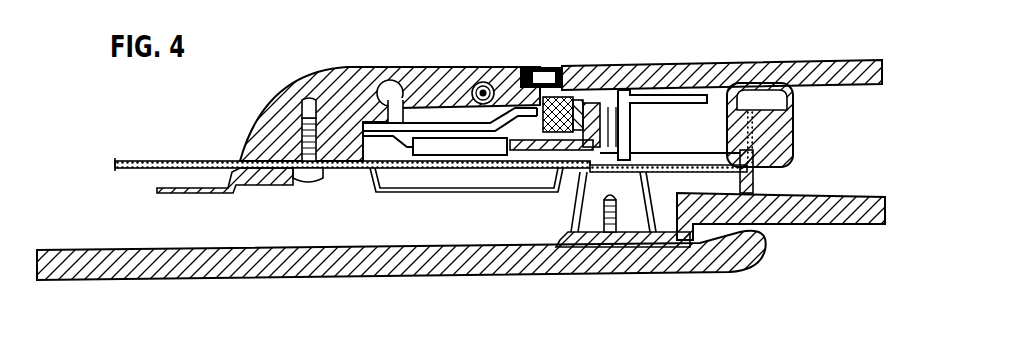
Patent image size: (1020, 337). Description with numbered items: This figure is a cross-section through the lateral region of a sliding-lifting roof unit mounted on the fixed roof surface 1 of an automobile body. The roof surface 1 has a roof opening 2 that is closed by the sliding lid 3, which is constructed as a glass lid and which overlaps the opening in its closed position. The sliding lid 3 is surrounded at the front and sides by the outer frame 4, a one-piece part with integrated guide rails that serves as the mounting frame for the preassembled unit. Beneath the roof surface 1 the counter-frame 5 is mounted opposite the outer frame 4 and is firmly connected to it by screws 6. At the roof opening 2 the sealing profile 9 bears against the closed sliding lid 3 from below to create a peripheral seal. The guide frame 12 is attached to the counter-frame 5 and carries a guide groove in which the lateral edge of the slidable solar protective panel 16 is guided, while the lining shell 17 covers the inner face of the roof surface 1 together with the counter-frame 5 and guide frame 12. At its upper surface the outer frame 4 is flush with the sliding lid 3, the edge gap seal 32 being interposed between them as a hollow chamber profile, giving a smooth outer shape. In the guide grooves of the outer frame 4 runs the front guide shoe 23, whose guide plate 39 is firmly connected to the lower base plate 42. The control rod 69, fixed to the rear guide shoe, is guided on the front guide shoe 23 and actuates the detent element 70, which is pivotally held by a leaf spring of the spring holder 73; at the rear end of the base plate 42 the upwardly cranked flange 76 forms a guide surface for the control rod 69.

The fixed roof surface 1 is at (168, 160).
The roof opening 2 is at (739, 130).
The sliding lid 3 is at (810, 61).
The outer frame 4 is at (300, 77).
The counter-frame 5 is at (162, 200).
The screw 6 is at (307, 186).
The sealing profile 9 is at (797, 160).
The guide frame 12 is at (570, 232).
The solar protective panel 16 is at (851, 215).
The lining shell 17 is at (448, 277).
The front guide shoe 23 is at (427, 117).
The edge gap seal 32 is at (541, 62).
The guide plate 39 is at (433, 168).
The lower base plate 42 is at (465, 163).
The control rod 69 is at (594, 66).
The detent element 70 is at (567, 66).
The spring holder 73 is at (633, 155).
The upwardly cranked flange 76 is at (621, 66).